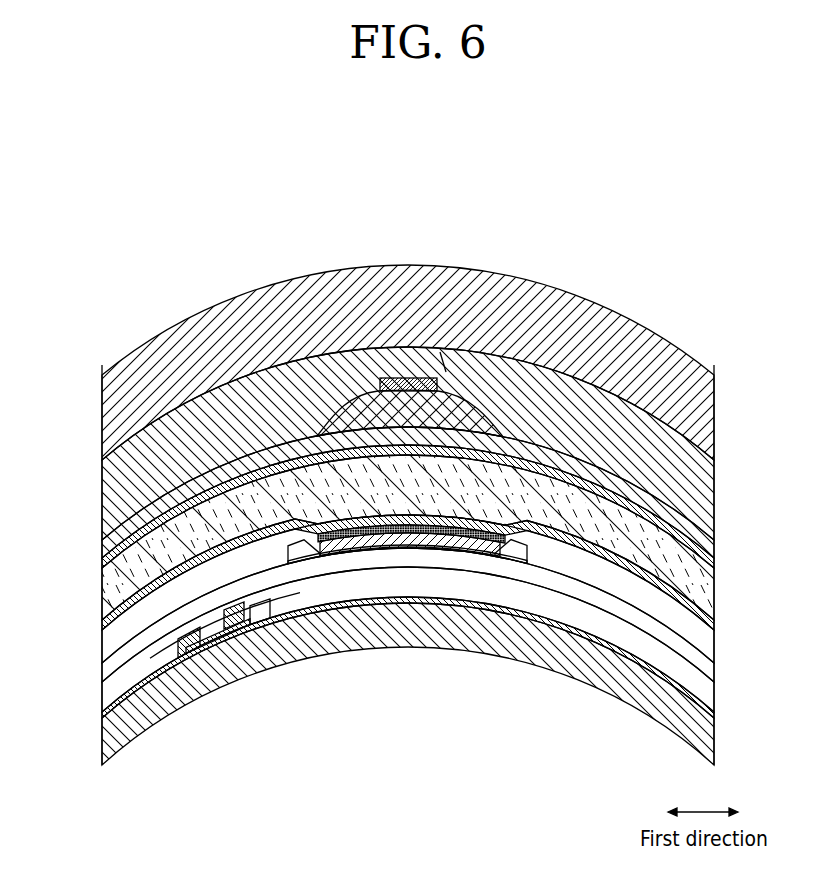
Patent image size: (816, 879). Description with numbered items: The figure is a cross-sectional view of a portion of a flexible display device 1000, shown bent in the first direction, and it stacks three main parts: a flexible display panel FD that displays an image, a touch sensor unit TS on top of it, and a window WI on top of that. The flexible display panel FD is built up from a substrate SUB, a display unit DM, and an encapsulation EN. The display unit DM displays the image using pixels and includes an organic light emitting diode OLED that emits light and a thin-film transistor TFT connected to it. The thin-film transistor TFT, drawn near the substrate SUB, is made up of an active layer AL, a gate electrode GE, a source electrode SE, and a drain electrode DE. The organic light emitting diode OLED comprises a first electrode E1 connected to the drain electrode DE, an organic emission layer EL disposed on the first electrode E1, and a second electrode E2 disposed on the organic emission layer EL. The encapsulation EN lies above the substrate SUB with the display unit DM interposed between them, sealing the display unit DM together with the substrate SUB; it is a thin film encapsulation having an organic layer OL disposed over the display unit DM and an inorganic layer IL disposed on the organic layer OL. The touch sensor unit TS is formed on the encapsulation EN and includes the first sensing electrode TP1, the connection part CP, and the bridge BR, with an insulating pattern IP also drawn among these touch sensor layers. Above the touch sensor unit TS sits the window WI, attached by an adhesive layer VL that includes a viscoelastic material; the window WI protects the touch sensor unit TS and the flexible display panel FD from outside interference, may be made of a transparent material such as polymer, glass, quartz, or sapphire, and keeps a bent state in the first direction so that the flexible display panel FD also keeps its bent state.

The flexible display device 1000 is at (397, 495).
The window WI is at (697, 431).
The touch sensor unit TS is at (408, 359).
The insulating pattern IP is at (342, 434).
The connection part CP is at (390, 427).
The bridge BR is at (405, 378).
The adhesive layer VL is at (430, 296).
The first sensing electrode TP1 is at (128, 527).
The encapsulation EN is at (367, 532).
The inorganic layer IL is at (120, 552).
The organic layer OL is at (109, 589).
The flexible display panel FD is at (112, 652).
The display unit DM is at (352, 562).
The organic light emitting diode OLED is at (407, 633).
The first electrode E1 is at (387, 564).
The organic emission layer EL is at (412, 550).
The second electrode E2 is at (442, 540).
The thin-film transistor TFT is at (228, 703).
The source electrode SE is at (192, 645).
The active layer AL is at (218, 636).
The gate electrode GE is at (234, 618).
The drain electrode DE is at (262, 614).
The substrate SUB is at (640, 687).